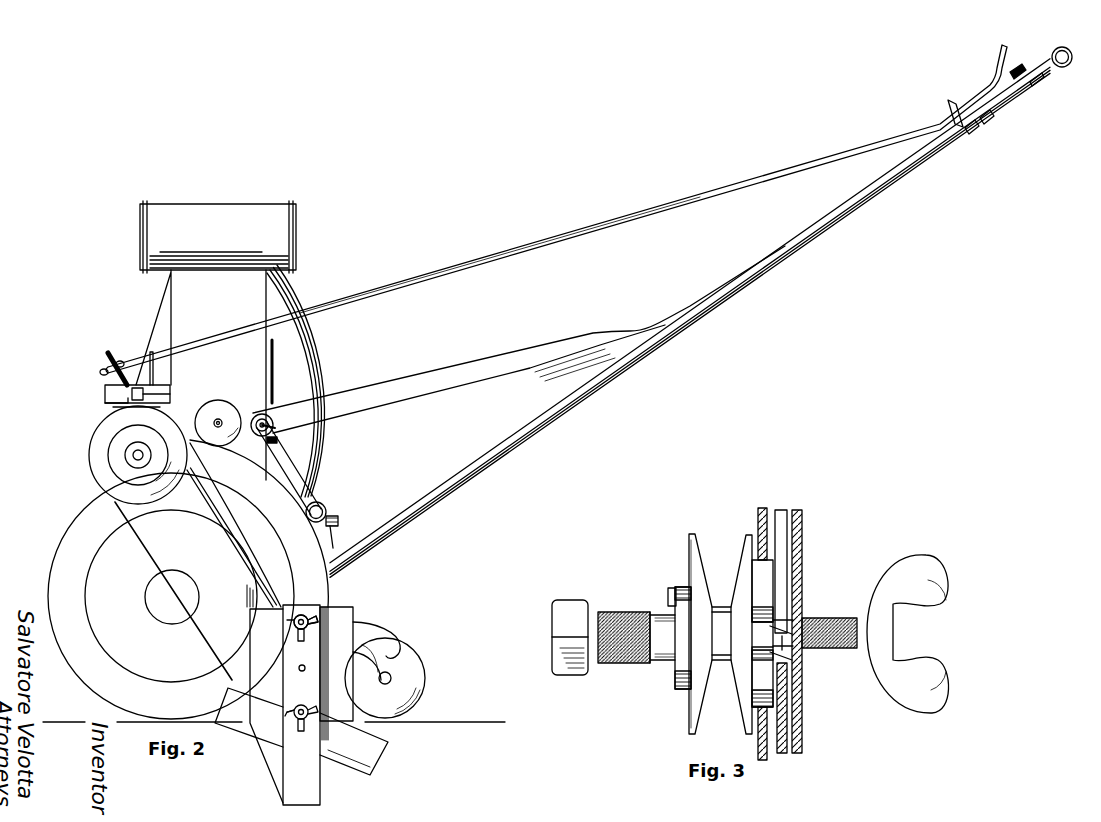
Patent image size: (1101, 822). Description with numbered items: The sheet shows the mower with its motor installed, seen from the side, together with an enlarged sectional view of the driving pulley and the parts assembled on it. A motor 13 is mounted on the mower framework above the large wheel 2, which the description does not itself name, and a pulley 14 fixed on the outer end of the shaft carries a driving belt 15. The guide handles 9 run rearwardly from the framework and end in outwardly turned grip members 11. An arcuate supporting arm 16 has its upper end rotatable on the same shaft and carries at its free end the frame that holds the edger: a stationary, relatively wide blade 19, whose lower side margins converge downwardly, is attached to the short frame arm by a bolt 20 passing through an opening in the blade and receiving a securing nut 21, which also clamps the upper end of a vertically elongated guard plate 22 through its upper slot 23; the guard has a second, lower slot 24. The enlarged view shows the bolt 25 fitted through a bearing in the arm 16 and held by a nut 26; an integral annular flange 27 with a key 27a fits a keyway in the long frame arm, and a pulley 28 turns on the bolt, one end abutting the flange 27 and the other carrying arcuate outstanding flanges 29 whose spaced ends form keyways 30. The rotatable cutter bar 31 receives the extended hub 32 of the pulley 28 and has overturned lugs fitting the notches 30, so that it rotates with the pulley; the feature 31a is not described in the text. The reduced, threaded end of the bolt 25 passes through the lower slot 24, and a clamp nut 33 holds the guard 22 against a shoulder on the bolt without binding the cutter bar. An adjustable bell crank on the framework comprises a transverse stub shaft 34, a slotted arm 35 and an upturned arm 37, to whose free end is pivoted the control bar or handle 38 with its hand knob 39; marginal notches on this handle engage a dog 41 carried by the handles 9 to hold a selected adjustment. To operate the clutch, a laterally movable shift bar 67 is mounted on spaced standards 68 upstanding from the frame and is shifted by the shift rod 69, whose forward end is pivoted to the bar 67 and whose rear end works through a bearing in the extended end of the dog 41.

In FIG. 2, the wheel 2 is at (55, 552).
In FIG. 2, the guide handles 9 is at (625, 375).
In FIG. 2, the grip members 11 is at (1060, 72).
In FIG. 2, the motor 13 is at (283, 302).
In FIG. 2, the pulley 14 is at (90, 440).
In FIG. 2, the driving belt 15 is at (160, 552).
In FIG. 2, the arcuate supporting arm 16 is at (315, 573).
In FIG. 2, the blade 19 is at (342, 633).
In FIG. 3, the blade 19 is at (757, 522).
In FIG. 2, the bolt 20 is at (308, 619).
In FIG. 2, the securing nut 21 is at (316, 627).
In FIG. 2, the guard plate 22 is at (321, 798).
In FIG. 3, the guard plate 22 is at (802, 548).
In FIG. 2, the upper vertical slot 23 is at (296, 629).
In FIG. 2, the lower vertical slot 24 is at (297, 722).
In FIG. 2, the bolt 25 is at (293, 708).
In FIG. 3, the bolt 25 is at (664, 663).
In FIG. 3, the nut 26 is at (570, 600).
In FIG. 3, the annular rib or flange 27 is at (677, 688).
In FIG. 3, the key 27a is at (668, 592).
In FIG. 3, the pulley 28 is at (689, 545).
In FIG. 3, the arcuate outstanding flanges 29 is at (763, 573).
In FIG. 3, the keyways 30 is at (757, 650).
In FIG. 2, the cutter bar 31 is at (388, 748).
In FIG. 3, the cutter bar 31 is at (782, 508).
In FIG. 3, the notch 31a is at (780, 632).
In FIG. 3, the extended hub 32 is at (800, 672).
In FIG. 2, the clamp nut 33 is at (325, 712).
In FIG. 3, the clamp nut 33 is at (925, 560).
In FIG. 2, the transverse stub shaft 34 is at (325, 510).
In FIG. 2, the arm 35 is at (340, 528).
In FIG. 2, the arm 37 is at (312, 480).
In FIG. 2, the control bar or handle 38 is at (486, 364).
In FIG. 2, the hand knob 39 is at (1020, 66).
In FIG. 2, the dog 41 is at (945, 108).
In FIG. 2, the shift bar 67 is at (150, 393).
In FIG. 2, the standards 68 is at (105, 402).
In FIG. 2, the shift rod 69 is at (509, 252).